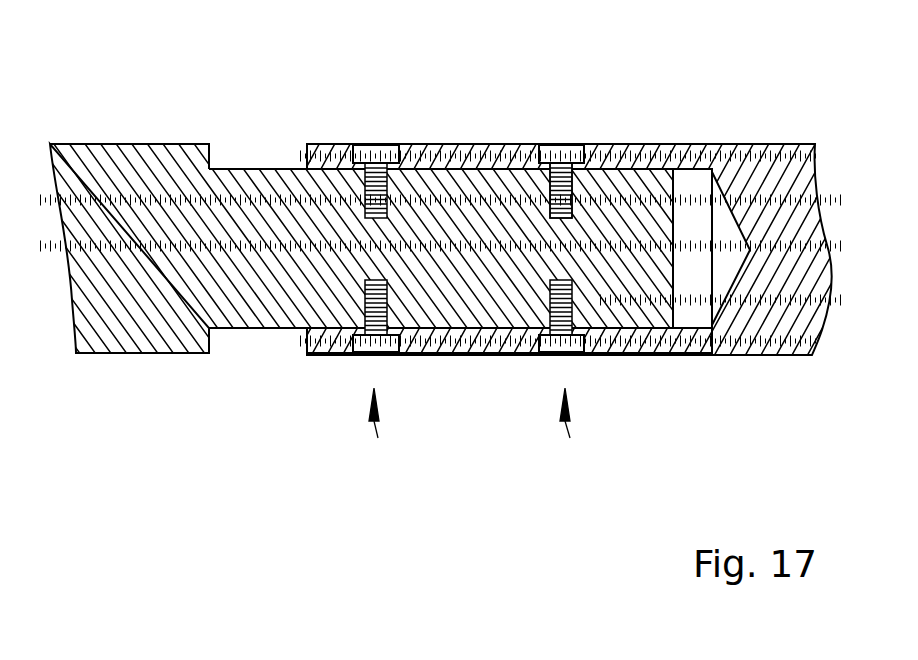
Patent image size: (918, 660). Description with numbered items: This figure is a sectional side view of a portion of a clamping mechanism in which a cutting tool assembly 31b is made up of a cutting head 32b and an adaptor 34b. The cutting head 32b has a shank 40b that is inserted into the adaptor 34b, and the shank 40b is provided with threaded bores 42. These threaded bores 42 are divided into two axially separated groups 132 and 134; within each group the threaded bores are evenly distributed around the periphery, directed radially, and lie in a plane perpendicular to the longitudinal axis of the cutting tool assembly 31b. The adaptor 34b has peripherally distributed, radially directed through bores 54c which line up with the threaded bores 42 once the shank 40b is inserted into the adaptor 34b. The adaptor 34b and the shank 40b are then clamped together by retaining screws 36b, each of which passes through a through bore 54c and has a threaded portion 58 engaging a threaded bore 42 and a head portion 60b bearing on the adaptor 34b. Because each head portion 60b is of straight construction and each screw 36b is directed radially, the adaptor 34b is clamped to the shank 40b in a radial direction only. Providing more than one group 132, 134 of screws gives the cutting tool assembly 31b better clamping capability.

The cutting tool assembly 31b is at (459, 318).
The cutting head 32b is at (138, 146).
The adaptor 34b is at (738, 333).
The retaining screw 36b is at (376, 146).
The shank 40b is at (267, 188).
The threaded bores 42 is at (434, 330).
The through bores 54c is at (363, 145).
The threaded portion 58 is at (547, 190).
The head portion 60b is at (392, 145).
The group of threaded bores 132 is at (377, 430).
The group of threaded bores 134 is at (571, 430).